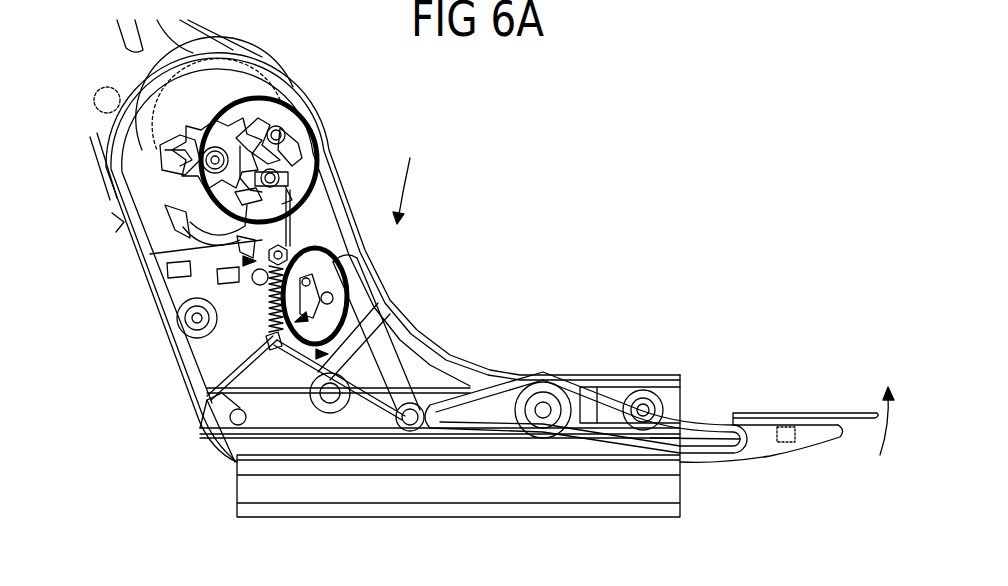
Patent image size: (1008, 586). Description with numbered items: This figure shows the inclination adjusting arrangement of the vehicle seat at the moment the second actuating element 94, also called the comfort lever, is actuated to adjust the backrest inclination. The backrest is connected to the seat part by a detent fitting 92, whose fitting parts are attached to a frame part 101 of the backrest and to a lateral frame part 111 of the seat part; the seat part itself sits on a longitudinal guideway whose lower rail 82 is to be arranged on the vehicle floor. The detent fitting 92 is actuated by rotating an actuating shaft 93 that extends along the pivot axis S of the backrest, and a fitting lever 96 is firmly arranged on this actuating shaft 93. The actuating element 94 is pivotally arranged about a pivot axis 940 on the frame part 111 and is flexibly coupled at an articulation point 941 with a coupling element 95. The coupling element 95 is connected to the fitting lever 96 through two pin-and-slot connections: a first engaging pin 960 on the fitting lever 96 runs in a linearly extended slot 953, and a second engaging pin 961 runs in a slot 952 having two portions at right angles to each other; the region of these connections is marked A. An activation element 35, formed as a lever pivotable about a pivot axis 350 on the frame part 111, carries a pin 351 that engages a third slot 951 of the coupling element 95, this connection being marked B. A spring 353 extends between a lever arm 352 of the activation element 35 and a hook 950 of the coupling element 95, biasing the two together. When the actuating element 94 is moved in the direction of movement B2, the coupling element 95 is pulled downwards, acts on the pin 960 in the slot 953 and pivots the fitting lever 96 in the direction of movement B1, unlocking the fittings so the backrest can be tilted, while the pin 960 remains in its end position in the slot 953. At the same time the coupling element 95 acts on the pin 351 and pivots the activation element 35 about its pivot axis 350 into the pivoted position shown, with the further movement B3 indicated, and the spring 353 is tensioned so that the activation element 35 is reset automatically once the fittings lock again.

The frame part 101 is at (117, 80).
The fitting lever 96 is at (235, 137).
The slot 953 is at (280, 131).
The engaging element (pin) 960 is at (291, 126).
The engaging element (pin) 961 is at (280, 180).
The slot 952 is at (250, 195).
The detent fitting 92 is at (163, 148).
The actuating shaft 93 is at (208, 162).
The pivot axis S is at (118, 226).
The lever arm 352 is at (166, 267).
The activation element 35 is at (268, 258).
The pivot axis 350 is at (270, 305).
The spring 353 is at (270, 320).
The frame part 111 is at (266, 336).
The slot 951 is at (222, 392).
The hook 950 is at (222, 405).
The lower rail 82 is at (273, 505).
The articulation point 941 is at (410, 432).
The pivot axis 940 is at (543, 440).
The actuating element 94 is at (718, 460).
The coupling element 95 is at (385, 357).
The pin 351 is at (310, 294).
The detail A is at (315, 172).
The detail B is at (340, 265).
The movement B1 is at (414, 191).
The movement B2 is at (868, 428).
The movement B3 is at (362, 322).